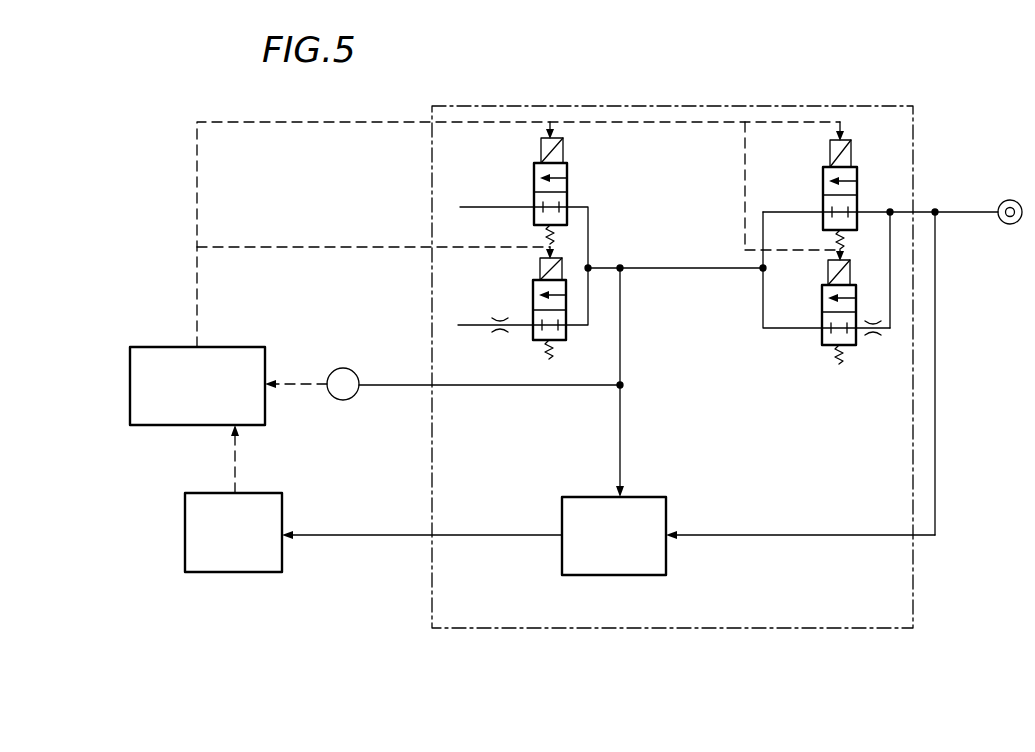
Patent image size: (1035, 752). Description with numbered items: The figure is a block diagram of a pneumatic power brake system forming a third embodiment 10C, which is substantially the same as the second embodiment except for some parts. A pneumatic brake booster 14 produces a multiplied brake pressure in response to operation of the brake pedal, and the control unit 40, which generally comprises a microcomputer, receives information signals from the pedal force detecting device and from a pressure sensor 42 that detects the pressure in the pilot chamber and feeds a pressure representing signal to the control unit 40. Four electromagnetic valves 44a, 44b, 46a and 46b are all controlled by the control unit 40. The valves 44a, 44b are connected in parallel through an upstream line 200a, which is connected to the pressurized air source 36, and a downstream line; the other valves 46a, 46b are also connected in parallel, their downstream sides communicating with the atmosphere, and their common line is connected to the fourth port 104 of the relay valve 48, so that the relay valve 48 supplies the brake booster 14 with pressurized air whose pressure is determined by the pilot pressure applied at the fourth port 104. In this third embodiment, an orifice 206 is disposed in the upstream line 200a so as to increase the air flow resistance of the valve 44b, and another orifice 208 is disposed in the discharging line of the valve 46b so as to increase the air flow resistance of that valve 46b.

The third embodiment 10C is at (672, 684).
The pneumatic brake booster 14 is at (185, 510).
The air source 36 is at (1013, 225).
The control unit 40 is at (245, 347).
The pressure sensor 42 is at (352, 397).
The electromagnetic valve 44a is at (857, 176).
The electromagnetic valve 44b is at (822, 336).
The electromagnetic valve 46a is at (567, 172).
The electromagnetic valve 46b is at (566, 335).
The relay valve 48 is at (667, 511).
The fourth port 104 is at (623, 494).
The upstream line 200a is at (890, 297).
The orifice 206 is at (873, 336).
The orifice 208 is at (500, 333).